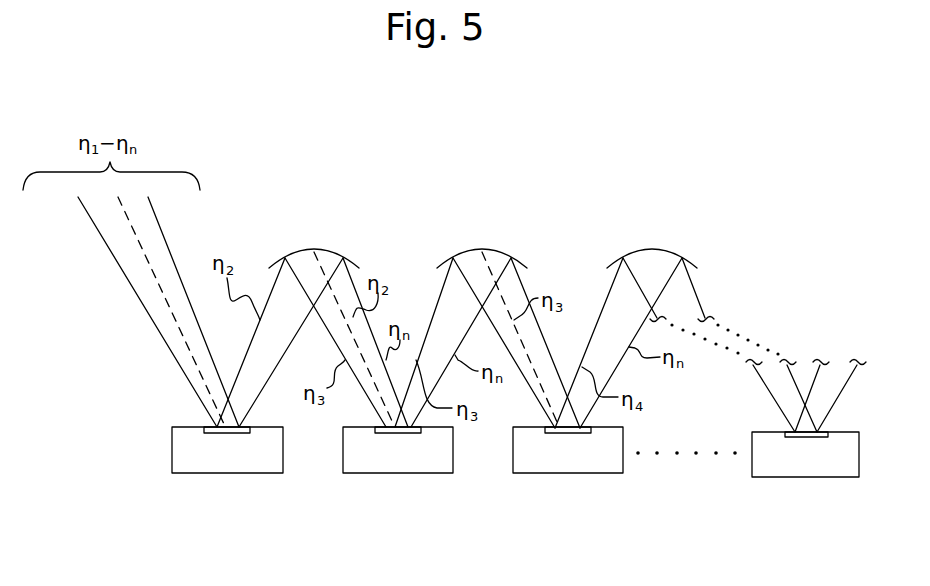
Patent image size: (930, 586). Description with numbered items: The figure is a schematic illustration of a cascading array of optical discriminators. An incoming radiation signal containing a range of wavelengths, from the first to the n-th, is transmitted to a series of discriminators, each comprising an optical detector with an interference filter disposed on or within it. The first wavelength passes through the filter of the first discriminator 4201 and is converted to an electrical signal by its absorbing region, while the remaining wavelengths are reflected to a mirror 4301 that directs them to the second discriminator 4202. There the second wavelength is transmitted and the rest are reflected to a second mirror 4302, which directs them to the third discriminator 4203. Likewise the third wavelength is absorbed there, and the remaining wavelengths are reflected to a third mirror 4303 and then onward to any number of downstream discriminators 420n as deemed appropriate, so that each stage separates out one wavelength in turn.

The first discriminator 4201 is at (227, 455).
The second discriminator 4202 is at (397, 455).
The third discriminator 4203 is at (567, 455).
The downstream discriminators 420n is at (805, 460).
The mirror 4301 is at (312, 248).
The second mirror 4302 is at (481, 248).
The third mirror 4303 is at (651, 248).